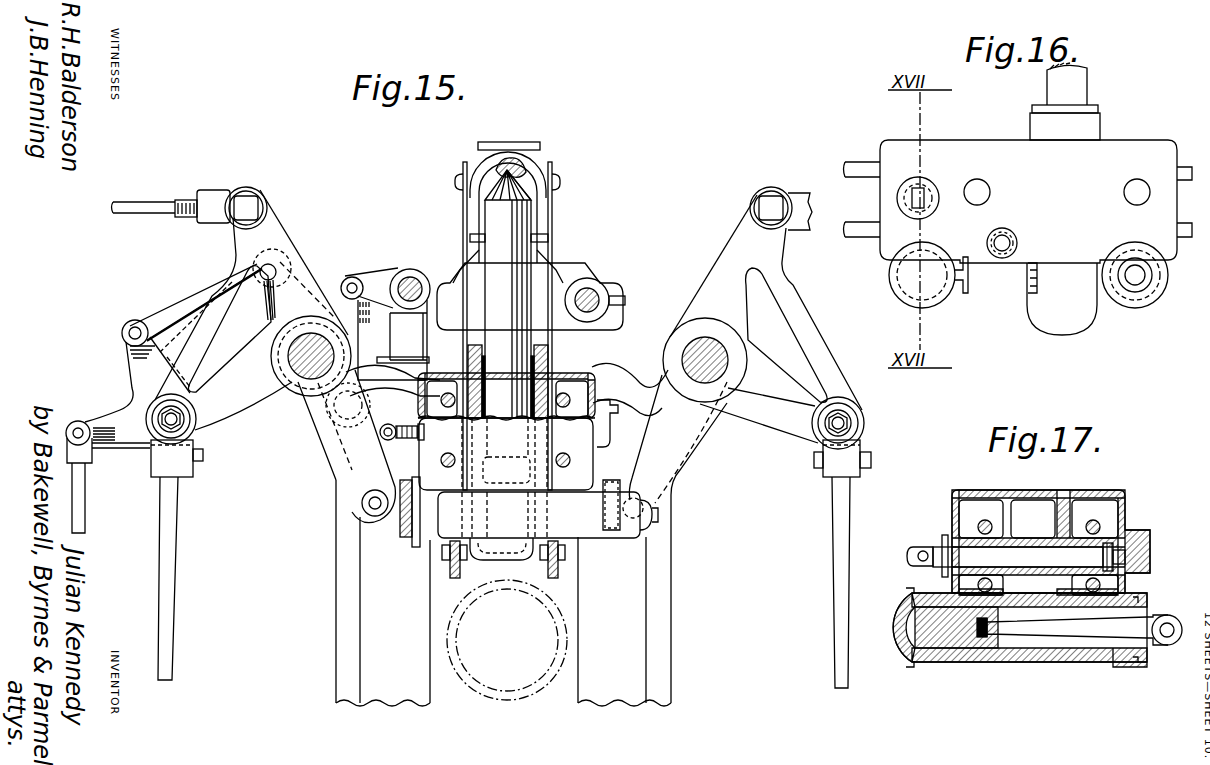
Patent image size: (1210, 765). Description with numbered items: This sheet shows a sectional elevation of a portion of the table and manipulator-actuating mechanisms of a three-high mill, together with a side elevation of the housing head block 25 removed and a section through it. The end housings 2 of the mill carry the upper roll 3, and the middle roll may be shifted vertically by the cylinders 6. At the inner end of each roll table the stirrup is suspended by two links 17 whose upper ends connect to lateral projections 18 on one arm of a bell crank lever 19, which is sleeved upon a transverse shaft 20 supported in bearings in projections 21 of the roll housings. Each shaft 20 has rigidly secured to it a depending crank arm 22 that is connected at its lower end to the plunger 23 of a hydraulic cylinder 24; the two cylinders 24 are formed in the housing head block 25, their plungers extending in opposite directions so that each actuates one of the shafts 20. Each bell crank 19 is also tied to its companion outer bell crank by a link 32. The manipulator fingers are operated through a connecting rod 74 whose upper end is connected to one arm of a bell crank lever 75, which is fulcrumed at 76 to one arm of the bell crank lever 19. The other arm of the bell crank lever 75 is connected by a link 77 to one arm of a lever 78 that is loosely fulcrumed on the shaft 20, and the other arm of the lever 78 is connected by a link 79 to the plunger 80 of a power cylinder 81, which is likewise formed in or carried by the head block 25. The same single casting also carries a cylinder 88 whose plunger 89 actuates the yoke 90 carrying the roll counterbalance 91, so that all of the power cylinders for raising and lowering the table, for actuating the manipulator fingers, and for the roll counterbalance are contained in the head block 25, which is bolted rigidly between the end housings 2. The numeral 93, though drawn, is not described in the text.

In FIG. 15, the end housings 2 is at (503, 593).
In FIG. 15, the upper roll 3 is at (512, 692).
In FIG. 15, the cylinders 6 is at (393, 368).
In FIG. 15, the links 17 is at (170, 543).
In FIG. 15, the lateral projections 18 is at (195, 433).
In FIG. 15, the bell crank lever 19 is at (246, 367).
In FIG. 15, the transverse shaft 20 is at (300, 365).
In FIG. 15, the projections 21 is at (305, 428).
In FIG. 15, the depending crank arm 22 is at (330, 458).
In FIG. 15, the plunger 23 is at (410, 513).
In FIG. 16, the plunger 23 is at (1140, 292).
In FIG. 17, the plunger 23 is at (1028, 632).
In FIG. 15, the hydraulic cylinder 24 is at (428, 530).
In FIG. 16, the hydraulic cylinder 24 is at (935, 300).
In FIG. 17, the hydraulic cylinder 24 is at (1077, 600).
In FIG. 15, the housing head block 25 is at (519, 451).
In FIG. 16, the housing head block 25 is at (1018, 237).
In FIG. 17, the housing head block 25 is at (997, 494).
In FIG. 15, the link 32 is at (150, 208).
In FIG. 15, the connecting rod 74 is at (86, 490).
In FIG. 15, the bell crank lever 75 is at (122, 410).
In FIG. 15, the fulcrum 76 is at (160, 420).
In FIG. 15, the link 77 is at (184, 308).
In FIG. 15, the lever 78 is at (266, 284).
In FIG. 15, the link 79 is at (349, 421).
In FIG. 15, the plunger 80 is at (407, 437).
In FIG. 16, the plunger 80 is at (906, 196).
In FIG. 17, the plunger 80 is at (912, 555).
In FIG. 15, the power cylinder 81 is at (420, 418).
In FIG. 16, the power cylinder 81 is at (908, 204).
In FIG. 17, the power cylinder 81 is at (1027, 548).
In FIG. 15, the cylinder 88 is at (548, 350).
In FIG. 16, the cylinder 88 is at (1100, 125).
In FIG. 15, the plunger 89 is at (520, 262).
In FIG. 16, the plunger 89 is at (1087, 90).
In FIG. 15, the yoke 90 is at (534, 165).
In FIG. 15, the roll counterbalance 91 is at (462, 208).
In FIG. 15, the trunnion 93 is at (592, 292).